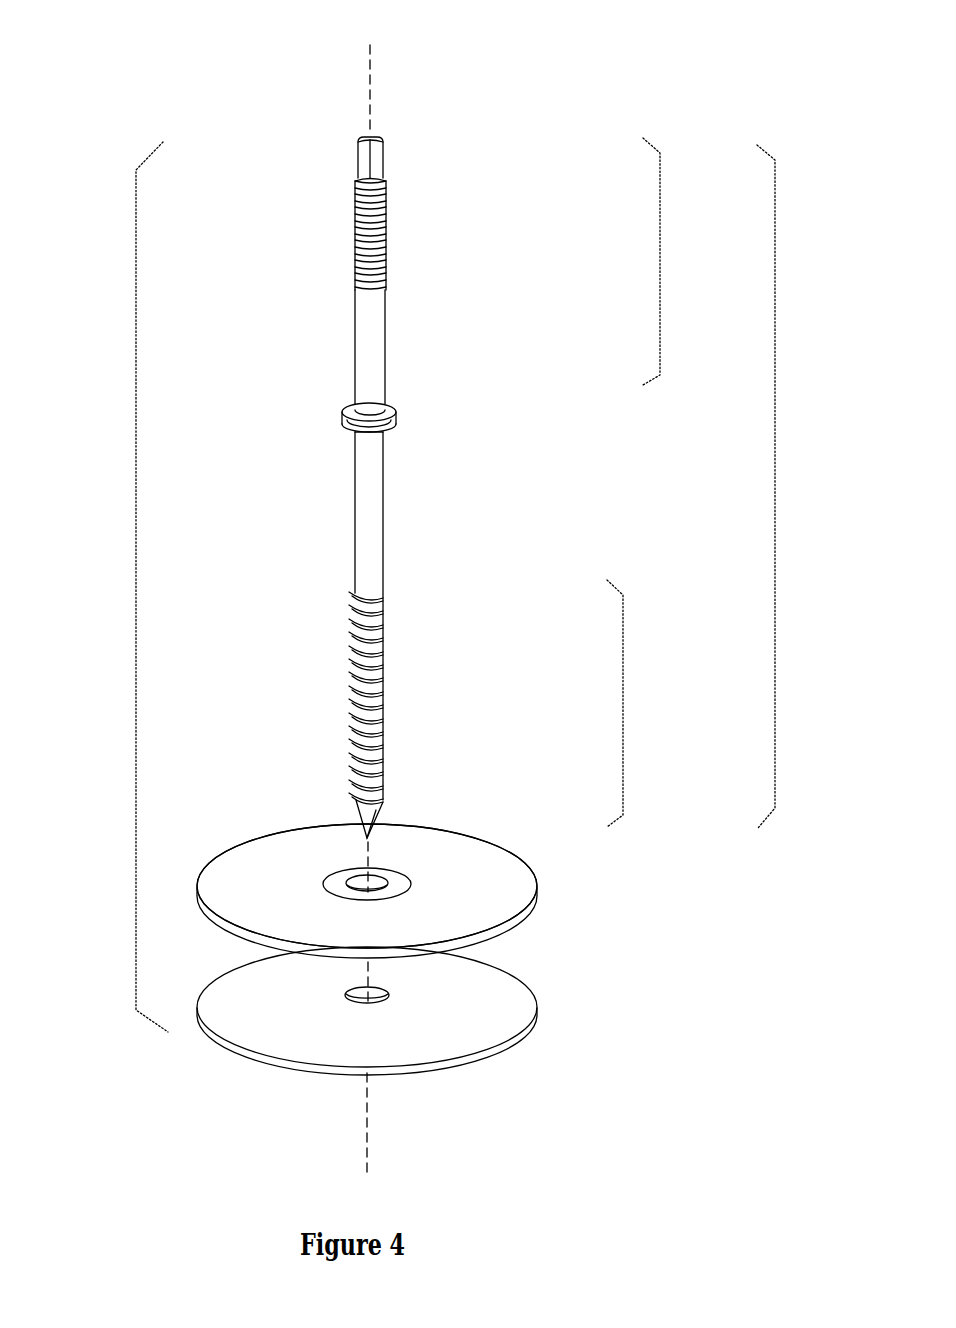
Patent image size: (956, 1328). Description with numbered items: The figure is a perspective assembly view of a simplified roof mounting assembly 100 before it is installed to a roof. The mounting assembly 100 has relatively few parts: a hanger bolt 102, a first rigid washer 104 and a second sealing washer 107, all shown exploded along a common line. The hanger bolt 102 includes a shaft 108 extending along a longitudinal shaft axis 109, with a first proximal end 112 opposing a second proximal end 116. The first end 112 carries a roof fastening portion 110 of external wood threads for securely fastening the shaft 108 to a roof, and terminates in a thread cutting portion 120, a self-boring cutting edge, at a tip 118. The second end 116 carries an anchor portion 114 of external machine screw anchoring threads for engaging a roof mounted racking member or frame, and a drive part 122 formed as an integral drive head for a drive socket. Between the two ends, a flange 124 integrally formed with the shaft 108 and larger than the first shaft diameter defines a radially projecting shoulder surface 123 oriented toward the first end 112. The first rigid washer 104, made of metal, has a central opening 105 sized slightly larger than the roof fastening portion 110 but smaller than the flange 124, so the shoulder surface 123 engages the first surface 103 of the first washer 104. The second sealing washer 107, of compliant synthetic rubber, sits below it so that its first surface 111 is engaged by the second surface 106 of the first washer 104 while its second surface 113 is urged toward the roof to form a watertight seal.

The mounting assembly 100 is at (134, 556).
The hanger bolt 102 is at (778, 467).
The first surface 103 is at (450, 841).
The first rigid washer 104 is at (463, 857).
The central opening 105 is at (389, 884).
The second surface 106 is at (460, 920).
The second sealing washer 107 is at (463, 988).
The shaft 108 is at (375, 519).
The longitudinal shaft axis 109 is at (370, 589).
The roof fastening portion 110 is at (384, 663).
The first surface 111 is at (463, 964).
The first proximal end 112 is at (625, 708).
The second surface 113 is at (468, 1025).
The anchor portion 114 is at (387, 235).
The second proximal end 116 is at (662, 266).
The tip 118 is at (366, 806).
The thread cutting portion 120 is at (378, 816).
The drive part 122 is at (384, 158).
The radially projecting shoulder surface 123 is at (370, 433).
The flange 124 is at (397, 421).